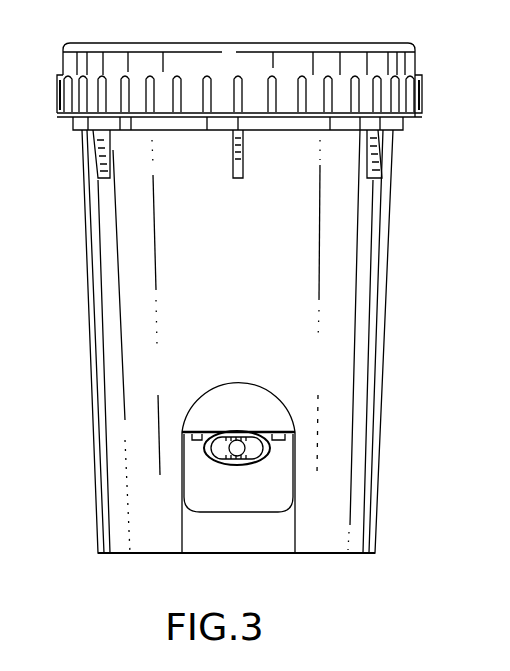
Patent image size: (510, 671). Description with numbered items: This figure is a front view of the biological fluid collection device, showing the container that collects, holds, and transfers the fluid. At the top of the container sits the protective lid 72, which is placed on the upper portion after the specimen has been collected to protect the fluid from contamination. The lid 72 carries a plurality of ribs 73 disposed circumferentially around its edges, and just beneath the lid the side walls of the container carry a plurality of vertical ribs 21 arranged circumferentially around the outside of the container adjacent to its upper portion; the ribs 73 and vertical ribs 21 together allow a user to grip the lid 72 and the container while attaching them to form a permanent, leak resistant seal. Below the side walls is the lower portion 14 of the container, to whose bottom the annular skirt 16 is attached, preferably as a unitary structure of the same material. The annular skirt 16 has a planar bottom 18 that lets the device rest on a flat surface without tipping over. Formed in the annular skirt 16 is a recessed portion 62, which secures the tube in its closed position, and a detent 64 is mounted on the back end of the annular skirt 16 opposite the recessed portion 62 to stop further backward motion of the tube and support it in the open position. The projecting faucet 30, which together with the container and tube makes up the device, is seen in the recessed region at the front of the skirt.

The lower portion 14 is at (213, 423).
The annular skirt 16 is at (105, 537).
The planar bottom 18 is at (138, 554).
The vertical ribs 21 is at (94, 158).
The projecting faucet 30 is at (272, 456).
The recessed portion 62 is at (287, 412).
The detent 64 is at (277, 535).
The lid 72 is at (412, 56).
The ribs 73 is at (420, 101).